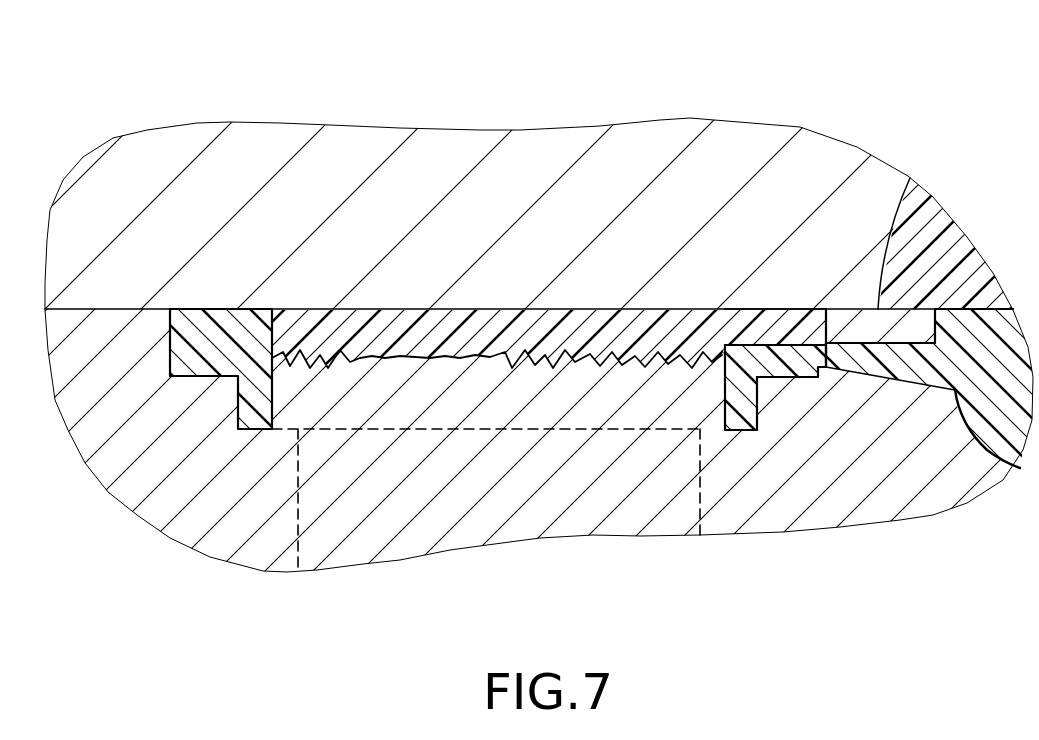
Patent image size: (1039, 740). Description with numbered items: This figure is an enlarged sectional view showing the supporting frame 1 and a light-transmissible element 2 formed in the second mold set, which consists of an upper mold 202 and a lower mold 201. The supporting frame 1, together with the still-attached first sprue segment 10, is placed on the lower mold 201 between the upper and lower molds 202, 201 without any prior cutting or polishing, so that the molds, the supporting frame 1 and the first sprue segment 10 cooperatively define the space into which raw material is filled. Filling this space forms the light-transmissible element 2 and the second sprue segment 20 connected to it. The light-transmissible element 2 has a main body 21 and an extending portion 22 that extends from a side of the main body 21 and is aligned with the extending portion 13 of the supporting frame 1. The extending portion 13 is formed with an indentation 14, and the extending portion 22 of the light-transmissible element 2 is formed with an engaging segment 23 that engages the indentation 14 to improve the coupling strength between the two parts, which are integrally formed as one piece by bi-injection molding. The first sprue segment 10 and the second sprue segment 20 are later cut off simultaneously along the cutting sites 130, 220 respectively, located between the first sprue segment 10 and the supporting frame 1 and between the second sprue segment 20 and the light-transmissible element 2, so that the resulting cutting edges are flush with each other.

The supporting frame 1 is at (217, 320).
The light-transmissible element 2 is at (522, 318).
The first sprue segment 10 is at (866, 366).
The extending portion of the supporting frame 13 is at (785, 373).
The indentation 14 is at (760, 352).
The second sprue segment 20 is at (858, 330).
The main body of the light-transmissible element 21 is at (624, 332).
The extending portion of the light-transmissible element 22 is at (741, 323).
The engaging segment 23 is at (770, 320).
The cutting site 130 is at (815, 368).
The lower mold 201 is at (405, 405).
The upper mold 202 is at (410, 147).
The cutting site 220 is at (822, 332).